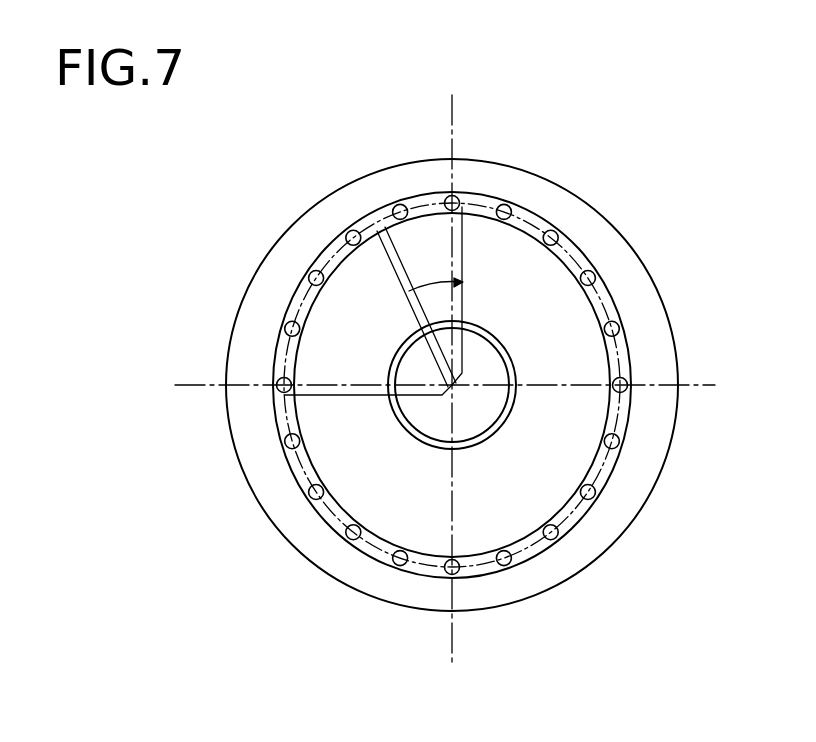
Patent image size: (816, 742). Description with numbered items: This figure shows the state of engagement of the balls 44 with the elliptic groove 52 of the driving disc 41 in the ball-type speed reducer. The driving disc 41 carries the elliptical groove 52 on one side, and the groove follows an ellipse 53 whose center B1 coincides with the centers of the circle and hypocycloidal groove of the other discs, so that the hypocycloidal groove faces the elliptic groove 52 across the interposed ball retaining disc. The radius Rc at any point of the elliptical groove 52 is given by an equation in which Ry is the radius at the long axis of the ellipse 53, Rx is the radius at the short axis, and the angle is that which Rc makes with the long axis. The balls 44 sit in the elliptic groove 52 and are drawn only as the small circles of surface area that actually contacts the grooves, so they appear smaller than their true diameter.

The driving disc 41 is at (592, 207).
The balls 44 is at (594, 273).
The elliptical groove 52 is at (385, 207).
The ellipse 53 is at (525, 212).
The center of ellipse B1 is at (452, 385).
The radius at any point in elliptical groove Rc is at (397, 307).
The radius at the long axis Ry is at (485, 296).
The radius at the short axis Rx is at (368, 418).